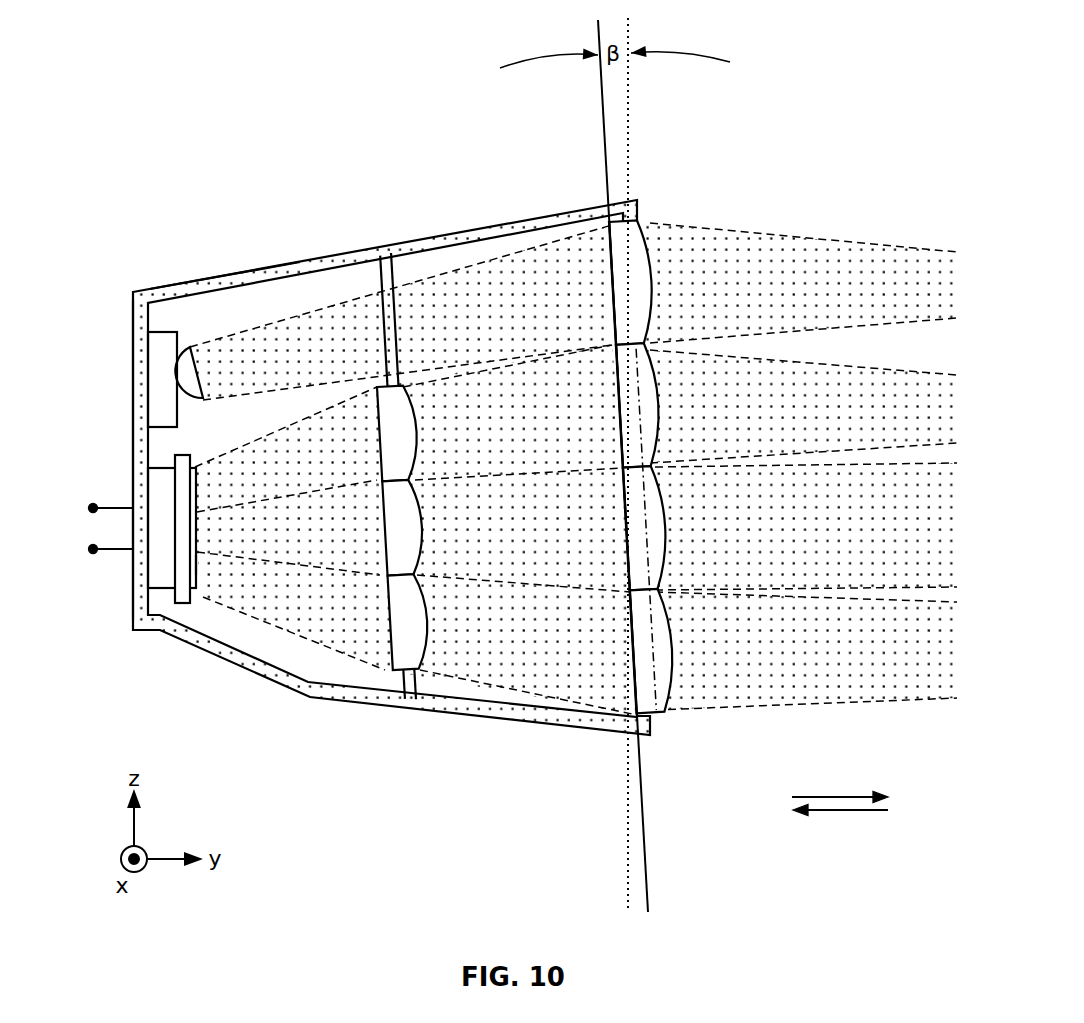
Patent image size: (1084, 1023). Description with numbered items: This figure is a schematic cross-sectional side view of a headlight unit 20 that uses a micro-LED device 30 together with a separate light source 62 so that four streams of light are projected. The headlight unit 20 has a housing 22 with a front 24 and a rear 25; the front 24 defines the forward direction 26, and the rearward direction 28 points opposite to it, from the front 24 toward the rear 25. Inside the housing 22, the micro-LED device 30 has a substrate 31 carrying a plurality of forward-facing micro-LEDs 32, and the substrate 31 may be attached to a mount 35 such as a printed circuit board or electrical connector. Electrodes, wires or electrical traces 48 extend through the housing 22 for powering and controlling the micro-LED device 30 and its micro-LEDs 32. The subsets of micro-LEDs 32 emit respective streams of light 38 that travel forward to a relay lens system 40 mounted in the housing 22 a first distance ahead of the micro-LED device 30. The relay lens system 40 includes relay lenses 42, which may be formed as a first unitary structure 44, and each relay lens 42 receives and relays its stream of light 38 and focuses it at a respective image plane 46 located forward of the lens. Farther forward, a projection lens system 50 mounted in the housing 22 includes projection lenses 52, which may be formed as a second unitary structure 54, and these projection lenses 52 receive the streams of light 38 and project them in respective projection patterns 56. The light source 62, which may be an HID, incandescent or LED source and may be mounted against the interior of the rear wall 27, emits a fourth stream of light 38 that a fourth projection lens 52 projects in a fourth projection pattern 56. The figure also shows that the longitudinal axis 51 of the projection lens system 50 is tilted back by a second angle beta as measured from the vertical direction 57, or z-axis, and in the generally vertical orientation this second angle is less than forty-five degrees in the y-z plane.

The headlight unit 20 is at (192, 128).
The housing 22 is at (356, 252).
The front 24 is at (602, 207).
The rear 25 is at (173, 298).
The forward direction 26 is at (857, 792).
The rear wall 27 is at (140, 330).
The rearward direction 28 is at (833, 812).
The micro-LED device 30 is at (166, 543).
The substrate 31 is at (180, 608).
The micro-LEDs 32 is at (197, 565).
The mount 35 is at (157, 500).
The streams of light 38 is at (350, 363).
The relay lens system 40 is at (423, 429).
The relay lenses 42 is at (410, 443).
The first unitary structure 44 is at (392, 222).
The image planes 46 is at (637, 395).
The electrical traces 48 is at (93, 593).
The projection lens system 50 is at (699, 426).
The longitudinal axis 51 is at (603, 110).
The projection lenses 52 is at (643, 302).
The second unitary structure 54 is at (699, 426).
The projection patterns 56 is at (877, 305).
The vertical direction 57 is at (630, 104).
The light source 62 is at (187, 372).